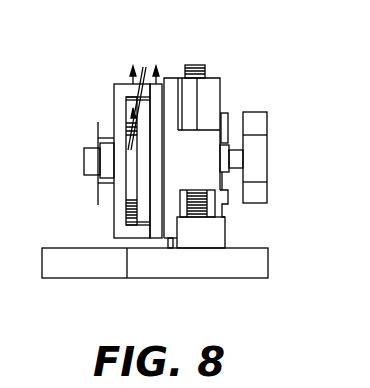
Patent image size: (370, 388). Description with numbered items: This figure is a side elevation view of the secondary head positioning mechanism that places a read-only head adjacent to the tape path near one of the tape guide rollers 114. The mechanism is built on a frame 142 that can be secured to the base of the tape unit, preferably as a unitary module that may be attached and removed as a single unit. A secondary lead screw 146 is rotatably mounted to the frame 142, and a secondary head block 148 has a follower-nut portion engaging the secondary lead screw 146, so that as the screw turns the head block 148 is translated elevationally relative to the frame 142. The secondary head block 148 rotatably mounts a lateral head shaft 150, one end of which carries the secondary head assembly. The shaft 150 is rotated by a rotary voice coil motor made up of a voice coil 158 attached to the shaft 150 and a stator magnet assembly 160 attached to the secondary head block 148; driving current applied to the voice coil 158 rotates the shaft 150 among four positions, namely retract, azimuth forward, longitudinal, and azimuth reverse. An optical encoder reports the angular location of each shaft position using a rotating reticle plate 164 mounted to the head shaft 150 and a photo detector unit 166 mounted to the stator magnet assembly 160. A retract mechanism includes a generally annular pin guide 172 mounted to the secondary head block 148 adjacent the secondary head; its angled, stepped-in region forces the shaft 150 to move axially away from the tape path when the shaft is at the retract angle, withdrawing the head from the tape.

The tape guide roller 114 is at (260, 115).
The frame 142 is at (268, 263).
The secondary lead screw 146 is at (197, 64).
The secondary head block 148 is at (172, 77).
The lateral head shaft 150 is at (234, 146).
The voice coil 158 is at (126, 210).
The stator magnet assembly 160 is at (148, 217).
The rotating reticle plate 164 is at (98, 132).
The photo detector unit 166 is at (82, 157).
The pin guide 172 is at (230, 196).